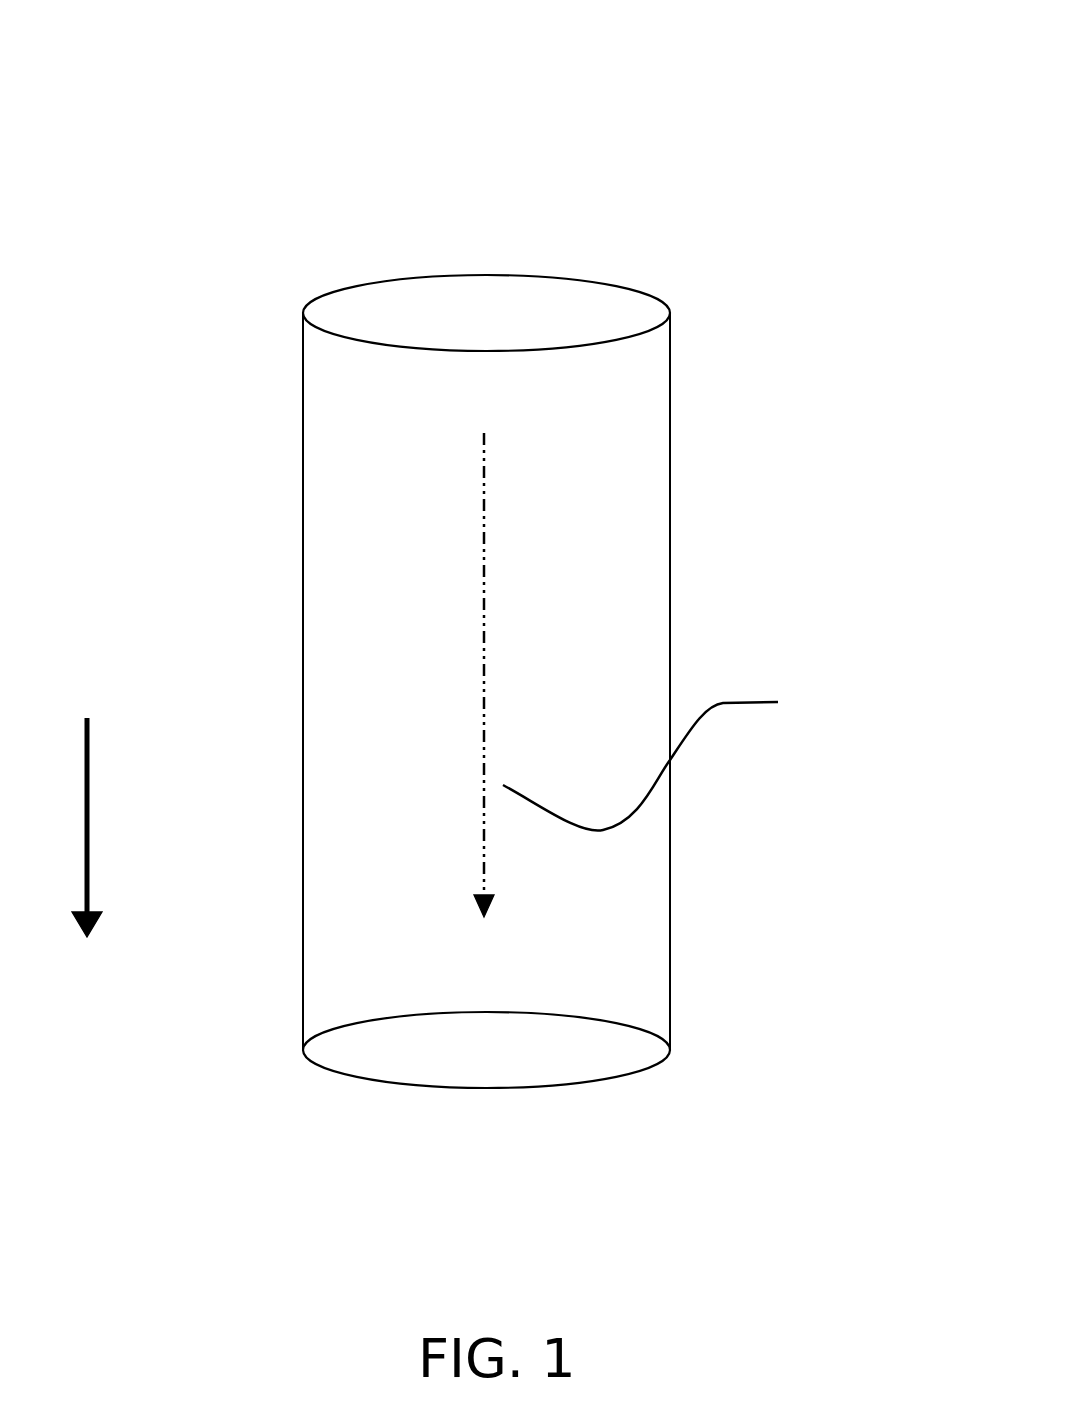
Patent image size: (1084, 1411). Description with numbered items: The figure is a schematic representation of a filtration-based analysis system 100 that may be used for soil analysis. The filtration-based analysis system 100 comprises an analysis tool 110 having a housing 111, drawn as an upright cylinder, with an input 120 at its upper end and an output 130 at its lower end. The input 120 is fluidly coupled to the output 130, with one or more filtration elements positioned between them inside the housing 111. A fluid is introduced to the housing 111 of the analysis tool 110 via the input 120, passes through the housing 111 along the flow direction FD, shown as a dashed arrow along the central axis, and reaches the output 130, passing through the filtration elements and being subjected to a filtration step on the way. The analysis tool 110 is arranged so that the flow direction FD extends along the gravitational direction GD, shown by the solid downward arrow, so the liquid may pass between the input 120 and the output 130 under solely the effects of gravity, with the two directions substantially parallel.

The filtration-based analysis system 100 is at (506, 642).
The analysis tool 110 is at (518, 727).
The housing 111 is at (352, 573).
The input 120 is at (470, 308).
The output 130 is at (508, 1066).